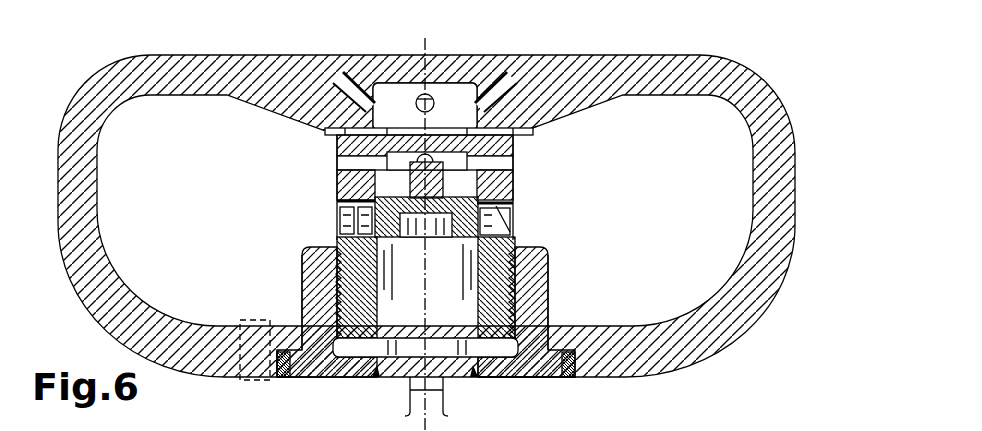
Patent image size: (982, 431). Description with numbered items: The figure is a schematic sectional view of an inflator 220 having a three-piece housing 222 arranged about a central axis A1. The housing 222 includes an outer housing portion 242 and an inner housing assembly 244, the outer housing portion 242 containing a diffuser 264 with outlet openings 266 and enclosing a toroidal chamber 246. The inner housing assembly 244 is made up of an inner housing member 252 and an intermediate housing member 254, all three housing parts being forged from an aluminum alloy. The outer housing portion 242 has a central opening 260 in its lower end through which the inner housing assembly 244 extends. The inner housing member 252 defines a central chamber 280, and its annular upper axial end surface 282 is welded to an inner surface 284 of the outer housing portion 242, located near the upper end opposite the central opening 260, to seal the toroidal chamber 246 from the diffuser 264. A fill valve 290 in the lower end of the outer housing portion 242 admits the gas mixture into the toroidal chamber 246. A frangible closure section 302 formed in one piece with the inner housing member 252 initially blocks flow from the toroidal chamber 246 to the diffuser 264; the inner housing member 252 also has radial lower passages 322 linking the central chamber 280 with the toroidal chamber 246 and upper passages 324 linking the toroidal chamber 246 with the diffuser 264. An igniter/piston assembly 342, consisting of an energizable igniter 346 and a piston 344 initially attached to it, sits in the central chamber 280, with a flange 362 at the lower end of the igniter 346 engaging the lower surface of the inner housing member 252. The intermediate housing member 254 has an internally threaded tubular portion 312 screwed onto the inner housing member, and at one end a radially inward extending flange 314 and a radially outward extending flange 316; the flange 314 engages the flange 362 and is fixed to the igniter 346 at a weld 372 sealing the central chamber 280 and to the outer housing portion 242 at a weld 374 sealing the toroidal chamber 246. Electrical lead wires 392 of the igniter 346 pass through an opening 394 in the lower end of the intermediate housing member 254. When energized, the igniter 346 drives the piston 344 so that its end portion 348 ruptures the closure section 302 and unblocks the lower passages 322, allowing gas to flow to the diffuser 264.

The inflator 220 is at (437, 189).
The three-piece housing 222 is at (577, 381).
The outer housing portion 242 is at (718, 324).
The inner housing assembly 244 is at (540, 233).
The toroidal chamber 246 is at (705, 160).
The inner housing member 252 is at (460, 187).
The intermediate housing member 254 is at (556, 282).
The central opening 260 is at (302, 314).
The diffuser 264 is at (376, 63).
The outlet openings 266 is at (338, 80).
The central chamber 280 is at (517, 242).
The upper axial end surface 282 is at (345, 112).
The inner surface 284 is at (538, 132).
The fill valve 290 is at (240, 383).
The frangible closure section 302 is at (518, 146).
The tubular portion 312 is at (541, 310).
The radially inward extending flange 314 is at (498, 378).
The radially outward extending flange 316 is at (538, 378).
The lower passages 322 is at (346, 205).
The upper passages 324 is at (336, 156).
The igniter/piston assembly 342 is at (368, 243).
The piston 344 is at (366, 220).
The igniter 346 is at (549, 268).
The end portion 348 is at (467, 164).
The flange 362 is at (405, 347).
The weld 372 is at (475, 368).
The weld 374 is at (280, 378).
The electrical lead wires 392 is at (412, 384).
The opening 394 is at (287, 373).
The central axis A1 is at (427, 46).